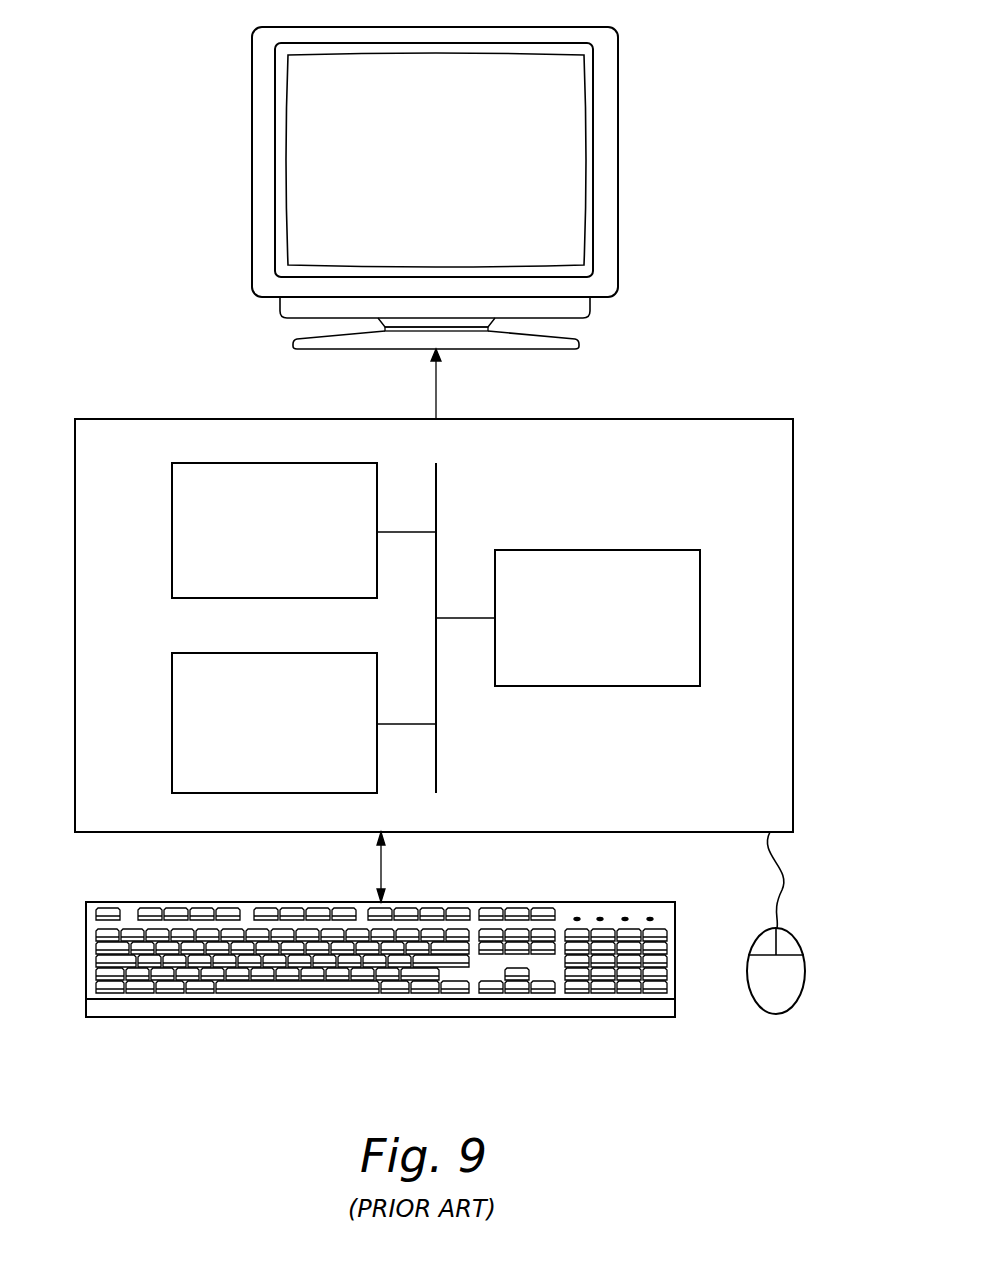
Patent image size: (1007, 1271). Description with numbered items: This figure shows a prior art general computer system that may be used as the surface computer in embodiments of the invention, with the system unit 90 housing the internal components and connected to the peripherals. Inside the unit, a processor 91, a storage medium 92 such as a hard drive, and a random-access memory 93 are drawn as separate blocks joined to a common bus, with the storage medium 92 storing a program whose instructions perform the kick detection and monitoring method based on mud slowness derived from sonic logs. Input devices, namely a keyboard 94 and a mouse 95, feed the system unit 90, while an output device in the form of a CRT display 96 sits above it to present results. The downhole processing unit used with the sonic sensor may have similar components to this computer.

The computer system unit 90 is at (705, 419).
The processor 91 is at (172, 526).
The storage medium 92 is at (172, 726).
The random-access memory 93 is at (703, 618).
The keyboard 94 is at (86, 951).
The mouse 95 is at (808, 968).
The CRT display 96 is at (620, 150).